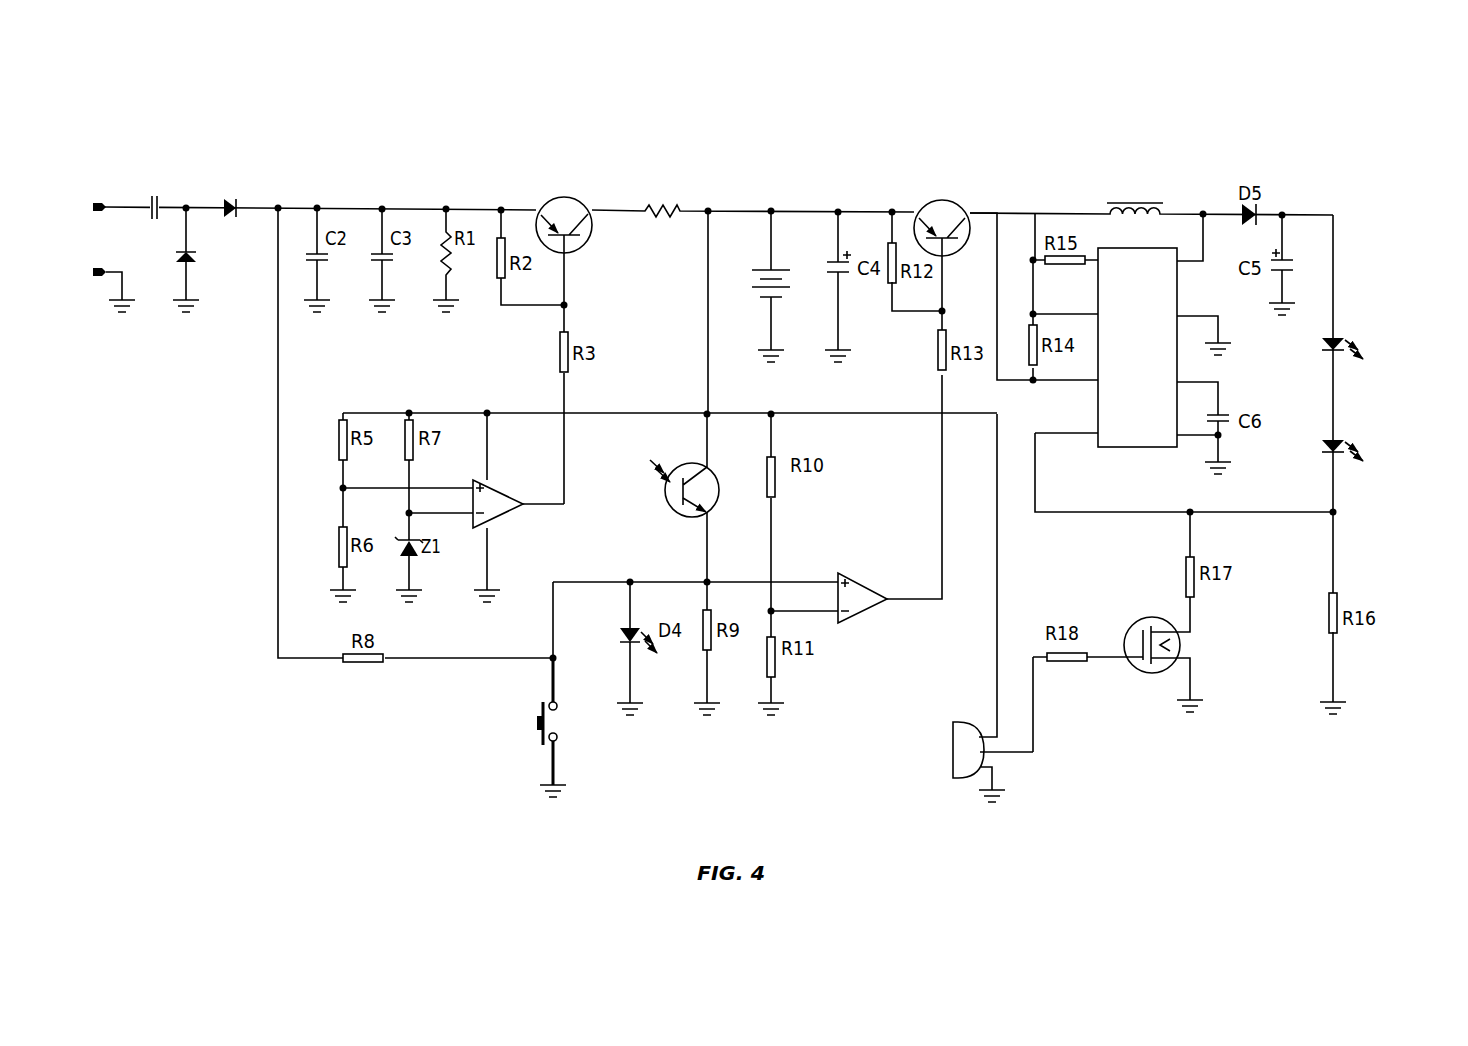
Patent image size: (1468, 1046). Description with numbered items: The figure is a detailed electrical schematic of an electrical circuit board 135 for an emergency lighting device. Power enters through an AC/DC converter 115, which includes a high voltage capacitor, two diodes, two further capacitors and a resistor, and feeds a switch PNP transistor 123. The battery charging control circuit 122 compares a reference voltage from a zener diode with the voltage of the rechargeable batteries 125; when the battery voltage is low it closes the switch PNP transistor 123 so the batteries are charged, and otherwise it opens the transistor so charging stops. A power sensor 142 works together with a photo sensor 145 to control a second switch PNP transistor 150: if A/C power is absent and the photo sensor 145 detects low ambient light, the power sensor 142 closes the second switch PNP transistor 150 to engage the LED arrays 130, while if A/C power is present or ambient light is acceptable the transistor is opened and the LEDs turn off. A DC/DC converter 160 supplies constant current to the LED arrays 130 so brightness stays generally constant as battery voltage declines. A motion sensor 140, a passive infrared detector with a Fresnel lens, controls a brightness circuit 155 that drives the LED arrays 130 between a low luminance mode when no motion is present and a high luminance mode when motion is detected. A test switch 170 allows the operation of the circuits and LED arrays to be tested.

The AC/DC converter 115 is at (478, 175).
The switch PNP transistor 123 is at (570, 197).
The rechargeable batteries 125 is at (733, 233).
The electrical circuit board 135 is at (976, 89).
The second switch PNP transistor 150 is at (959, 196).
The photo sensor 145 is at (661, 498).
The battery charging control circuit 122 is at (509, 528).
The power sensor 142 is at (881, 608).
The motion sensor 140 is at (948, 769).
The brightness circuit 155 is at (1145, 676).
The test switch 170 is at (526, 727).
The DC/DC converter 160 is at (1139, 342).
The LED arrays 130 is at (1402, 331).